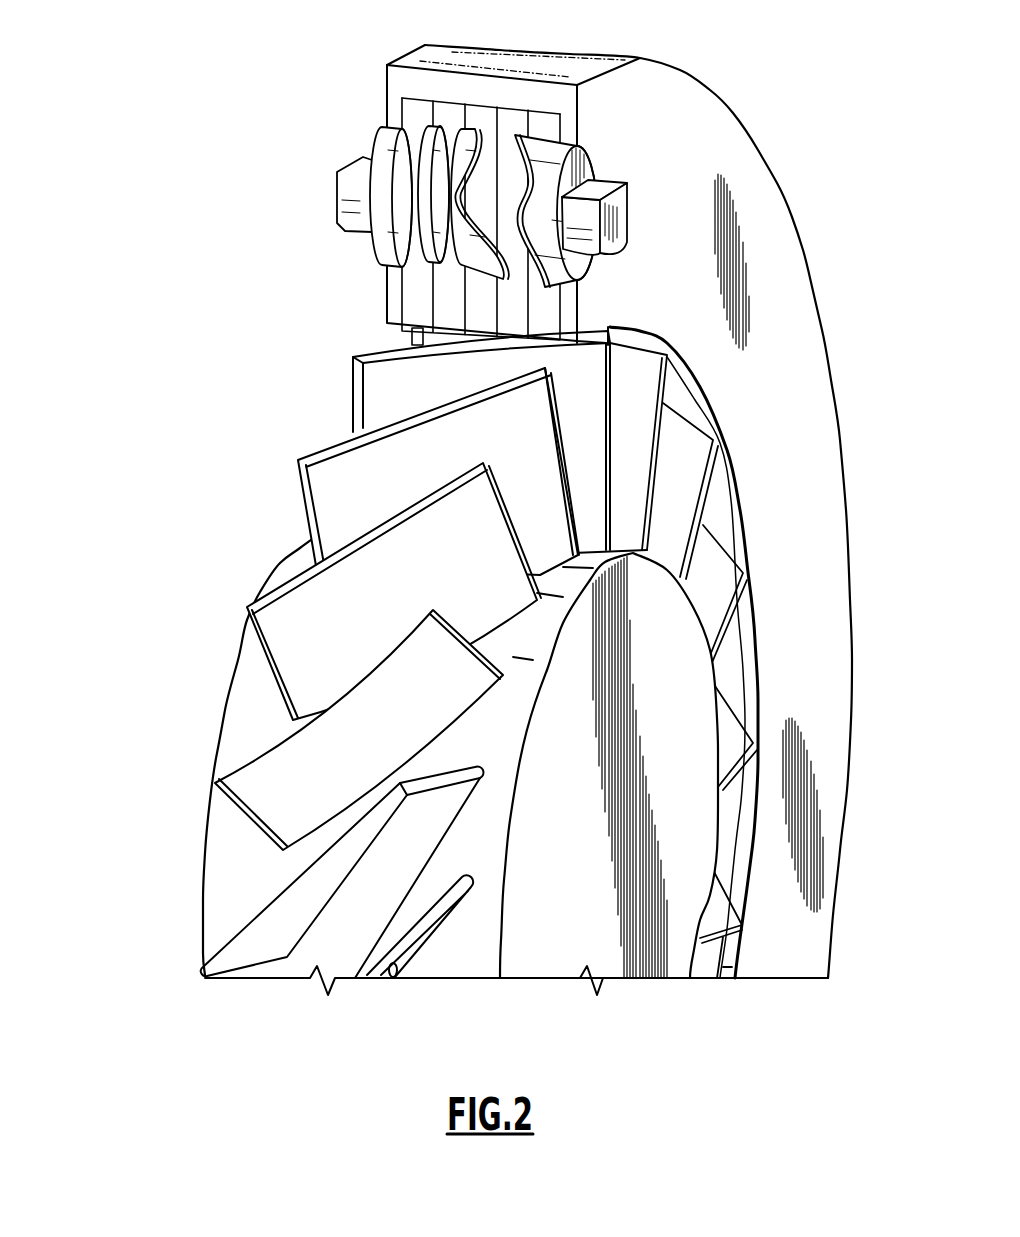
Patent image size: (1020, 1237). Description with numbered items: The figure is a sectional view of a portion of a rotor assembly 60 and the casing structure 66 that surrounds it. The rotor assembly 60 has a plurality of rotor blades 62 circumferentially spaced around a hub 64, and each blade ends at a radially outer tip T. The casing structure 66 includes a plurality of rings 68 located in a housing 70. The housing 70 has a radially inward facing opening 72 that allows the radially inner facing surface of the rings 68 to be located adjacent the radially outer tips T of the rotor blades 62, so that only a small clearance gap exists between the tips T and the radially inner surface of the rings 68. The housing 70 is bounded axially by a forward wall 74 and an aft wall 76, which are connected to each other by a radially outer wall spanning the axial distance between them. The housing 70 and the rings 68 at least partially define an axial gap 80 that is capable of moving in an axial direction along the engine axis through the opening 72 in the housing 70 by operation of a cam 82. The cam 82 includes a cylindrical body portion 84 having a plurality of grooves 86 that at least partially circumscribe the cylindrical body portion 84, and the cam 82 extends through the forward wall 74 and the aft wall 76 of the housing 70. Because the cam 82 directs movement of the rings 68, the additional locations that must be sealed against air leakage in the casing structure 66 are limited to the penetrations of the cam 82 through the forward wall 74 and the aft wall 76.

The rotor assembly 60 is at (130, 518).
The rotor blades 62 is at (404, 652).
The hub 64 is at (230, 884).
The casing structure 66 is at (745, 85).
The rings 68 is at (512, 117).
The housing 70 is at (585, 52).
The radially inward facing opening 72 is at (470, 176).
The forward wall 74 is at (398, 293).
The aft wall 76 is at (772, 263).
The axial gap 80 is at (552, 312).
The cam 82 is at (487, 186).
The cylindrical body portion 84 is at (548, 150).
The grooves 86 is at (430, 212).
The radially outer tips T is at (368, 357).